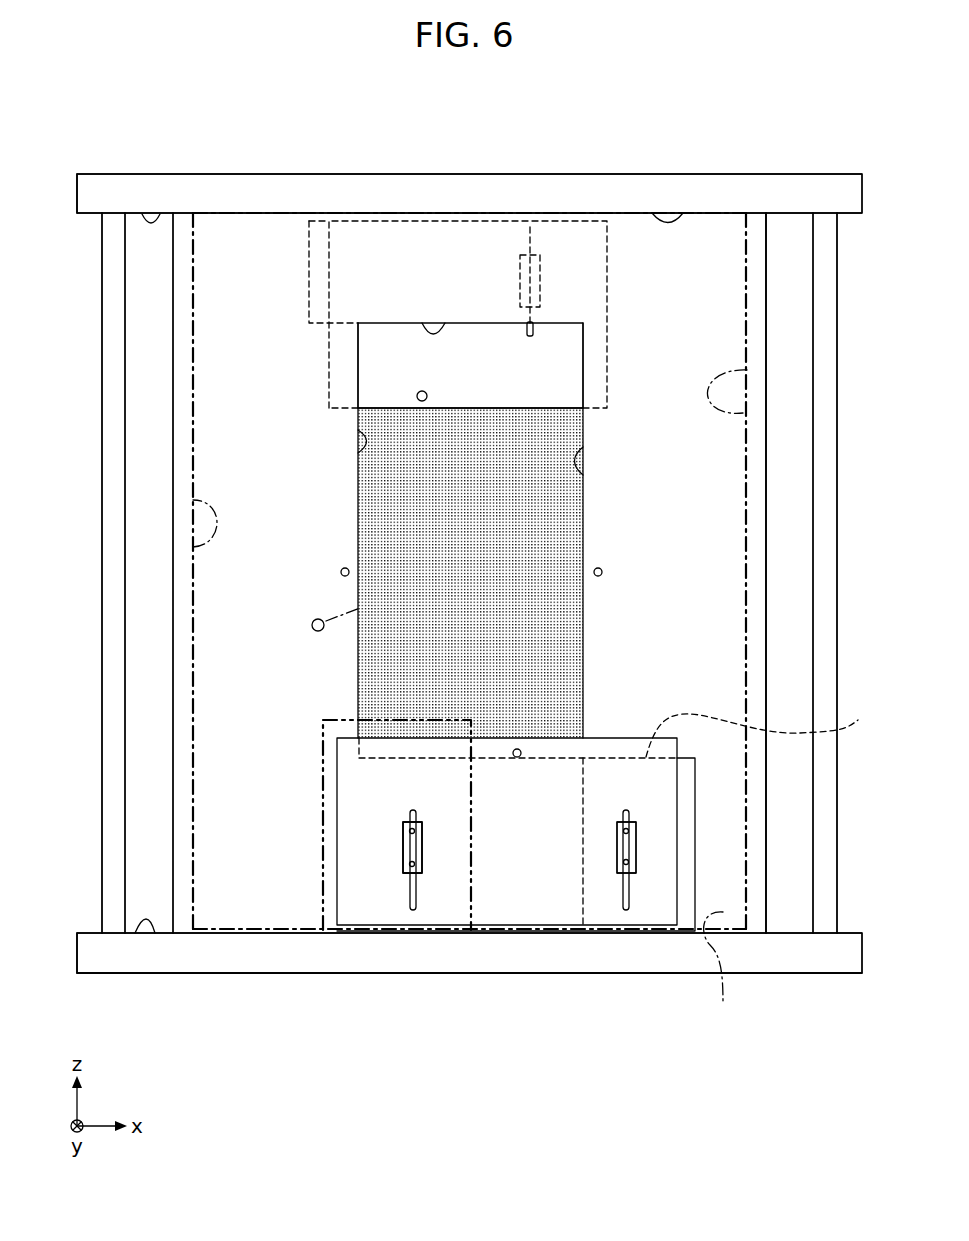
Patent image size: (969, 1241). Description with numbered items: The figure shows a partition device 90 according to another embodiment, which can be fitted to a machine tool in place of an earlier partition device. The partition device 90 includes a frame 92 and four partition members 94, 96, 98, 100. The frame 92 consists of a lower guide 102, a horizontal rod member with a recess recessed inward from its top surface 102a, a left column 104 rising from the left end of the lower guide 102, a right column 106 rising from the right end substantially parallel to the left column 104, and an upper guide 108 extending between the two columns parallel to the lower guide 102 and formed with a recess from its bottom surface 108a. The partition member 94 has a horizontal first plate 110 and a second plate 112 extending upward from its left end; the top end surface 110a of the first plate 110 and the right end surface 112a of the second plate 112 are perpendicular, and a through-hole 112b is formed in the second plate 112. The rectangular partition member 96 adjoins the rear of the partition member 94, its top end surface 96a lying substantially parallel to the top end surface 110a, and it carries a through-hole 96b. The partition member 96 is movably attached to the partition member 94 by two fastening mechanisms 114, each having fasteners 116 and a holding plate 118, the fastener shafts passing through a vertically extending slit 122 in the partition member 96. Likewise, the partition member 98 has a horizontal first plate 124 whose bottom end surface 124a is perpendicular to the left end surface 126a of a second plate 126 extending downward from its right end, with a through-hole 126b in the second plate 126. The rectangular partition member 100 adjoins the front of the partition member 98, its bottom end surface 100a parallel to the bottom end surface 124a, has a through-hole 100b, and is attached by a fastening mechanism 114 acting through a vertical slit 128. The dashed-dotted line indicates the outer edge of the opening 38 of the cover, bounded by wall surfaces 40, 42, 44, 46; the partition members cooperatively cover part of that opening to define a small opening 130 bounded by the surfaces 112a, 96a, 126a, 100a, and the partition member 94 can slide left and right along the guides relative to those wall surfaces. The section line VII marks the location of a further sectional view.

The partition device 90 is at (836, 95).
The upper guide 108 is at (283, 182).
The bottom surface of the upper guide 108a is at (142, 214).
The lower guide 102 is at (338, 962).
The top surface of the lower guide 102a is at (137, 933).
The frame 92 is at (562, 973).
The left column 104 is at (110, 342).
The second plate 112 is at (227, 382).
The right end surface of the second plate 112a is at (358, 452).
The through-hole 112b is at (343, 574).
The partition member 94 is at (173, 688).
The wall surface 42 is at (193, 547).
The second plate 126 is at (685, 528).
The right column 106 is at (827, 795).
The left end surface of the second plate 126a is at (582, 447).
The through-hole 126b is at (601, 575).
The partition member 98 is at (767, 580).
The opening 38 is at (747, 299).
The wall surface 44 is at (747, 370).
The wall surface 46 is at (685, 213).
The partition member 100 is at (563, 365).
The bottom end surface of the partition member 100a is at (578, 428).
The through-hole 100b is at (418, 392).
The first plate 124 is at (462, 238).
The bottom end surface of the first plate 124a is at (422, 323).
The slit 128 is at (527, 330).
The small opening 130 is at (409, 532).
The partition member 96 is at (532, 913).
The top end surface of the partition member 96a is at (555, 738).
The through-hole 96b is at (516, 757).
The first plate 110 is at (688, 852).
The top end surface of the first plate 110a is at (770, 727).
The wall surface 40 is at (716, 972).
The section VII is at (318, 880).
The fastener 116 is at (410, 833).
The slit 122 is at (413, 888).
The holding plate 118 is at (419, 848).
The fastening mechanism 114 is at (545, 282).